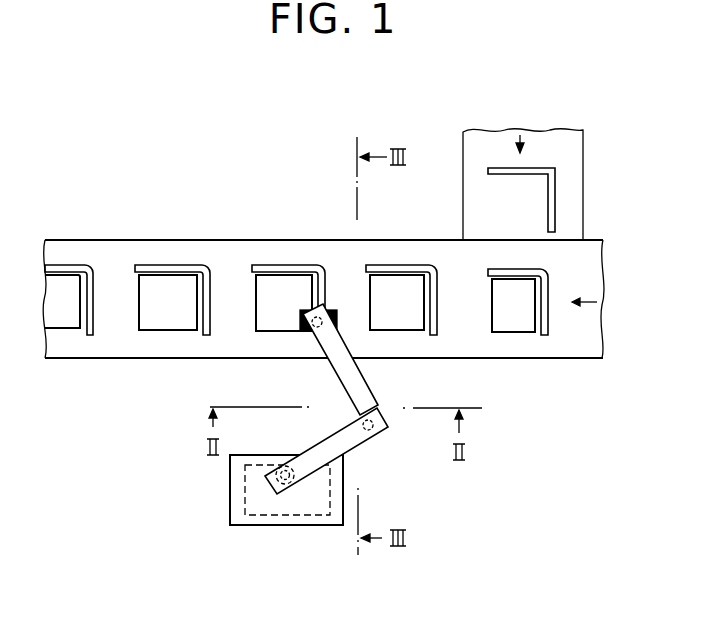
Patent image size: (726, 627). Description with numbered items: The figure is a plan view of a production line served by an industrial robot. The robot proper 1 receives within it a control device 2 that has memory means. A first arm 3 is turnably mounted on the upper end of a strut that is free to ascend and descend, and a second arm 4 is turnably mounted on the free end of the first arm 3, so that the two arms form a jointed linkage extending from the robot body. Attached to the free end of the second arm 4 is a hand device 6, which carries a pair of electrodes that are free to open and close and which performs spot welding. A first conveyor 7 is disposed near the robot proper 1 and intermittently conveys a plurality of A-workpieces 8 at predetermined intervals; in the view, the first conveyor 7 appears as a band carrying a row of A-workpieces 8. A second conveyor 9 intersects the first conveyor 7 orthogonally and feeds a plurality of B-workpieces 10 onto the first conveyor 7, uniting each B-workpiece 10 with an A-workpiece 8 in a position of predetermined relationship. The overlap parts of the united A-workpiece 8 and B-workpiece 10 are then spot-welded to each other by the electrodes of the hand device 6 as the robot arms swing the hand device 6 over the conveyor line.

The robot proper 1 is at (230, 492).
The control device 2 is at (262, 517).
The first arm 3 is at (353, 438).
The second arm 4 is at (342, 381).
The hand device 6 is at (336, 310).
The first conveyor 7 is at (410, 240).
The A-workpiece 8 is at (423, 307).
The second conveyor 9 is at (463, 133).
The B-workpiece 10 is at (557, 196).